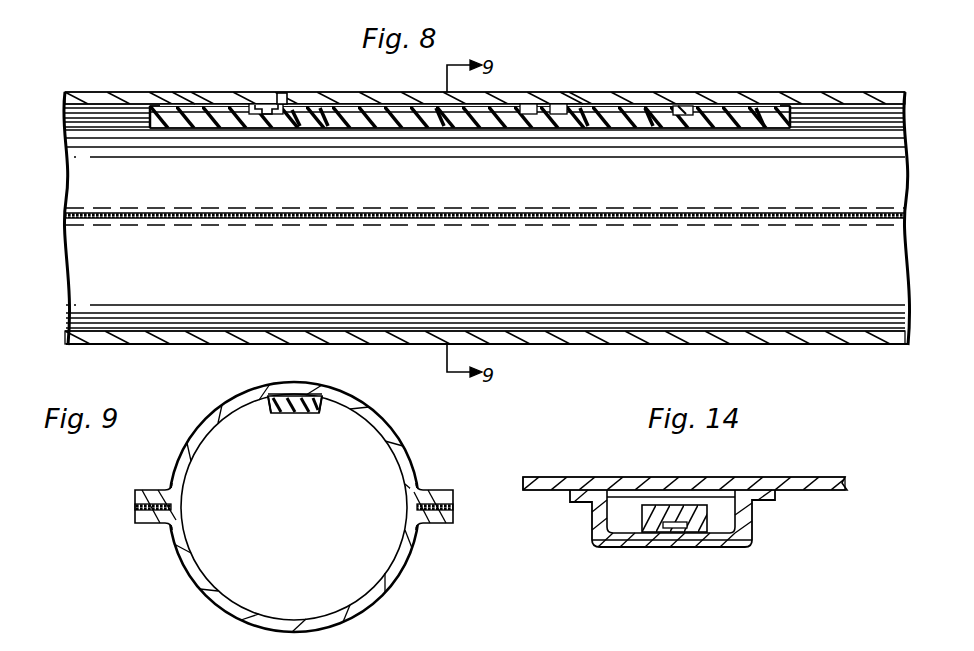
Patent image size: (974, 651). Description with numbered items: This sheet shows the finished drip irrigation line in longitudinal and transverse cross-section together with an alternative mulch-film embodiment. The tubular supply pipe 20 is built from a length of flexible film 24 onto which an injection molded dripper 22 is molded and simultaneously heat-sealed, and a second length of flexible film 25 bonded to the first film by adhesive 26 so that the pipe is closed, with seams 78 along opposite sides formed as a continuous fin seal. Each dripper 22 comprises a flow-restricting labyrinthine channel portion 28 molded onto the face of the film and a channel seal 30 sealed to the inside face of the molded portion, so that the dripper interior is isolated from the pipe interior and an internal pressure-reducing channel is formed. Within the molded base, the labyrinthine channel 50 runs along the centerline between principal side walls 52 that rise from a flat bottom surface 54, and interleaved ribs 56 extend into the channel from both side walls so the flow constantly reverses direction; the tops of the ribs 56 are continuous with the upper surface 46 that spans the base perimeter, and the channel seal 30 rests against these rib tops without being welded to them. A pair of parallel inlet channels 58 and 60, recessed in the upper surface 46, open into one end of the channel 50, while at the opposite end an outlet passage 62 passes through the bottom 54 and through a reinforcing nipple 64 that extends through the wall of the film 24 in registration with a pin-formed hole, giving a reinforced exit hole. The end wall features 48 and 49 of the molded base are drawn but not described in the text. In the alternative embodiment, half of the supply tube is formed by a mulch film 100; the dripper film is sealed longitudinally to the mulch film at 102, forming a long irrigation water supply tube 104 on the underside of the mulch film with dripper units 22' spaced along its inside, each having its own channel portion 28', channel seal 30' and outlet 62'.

In FIG. 8, the tubular supply pipe 20 is at (708, 350).
In FIG. 9, the tubular supply pipe 20 is at (428, 470).
In FIG. 8, the injection molded dripper 22 is at (470, 147).
In FIG. 9, the injection molded dripper 22 is at (309, 430).
In FIG. 8, the flexible film 24 is at (588, 101).
In FIG. 9, the flexible film 24 is at (396, 433).
In FIG. 14, the flexible film 24 is at (650, 548).
In FIG. 8, the second flexible film 25 is at (624, 340).
In FIG. 9, the second flexible film 25 is at (386, 592).
In FIG. 8, the adhesive 26 is at (494, 216).
In FIG. 9, the adhesive 26 is at (444, 496).
In FIG. 8, the labyrinthine channel portion 28 is at (470, 146).
In FIG. 8, the channel seal 30 is at (512, 147).
In FIG. 9, the channel seal 30 is at (295, 421).
In FIG. 8, the upper surface 46 is at (756, 128).
In FIG. 9, the upper surface 46 is at (270, 408).
In FIG. 8, the wall portion 48 is at (182, 102).
In FIG. 8, the end wall 49 is at (152, 122).
In FIG. 8, the labyrinthine channel 50 is at (438, 118).
In FIG. 8, the principal side walls 52 is at (322, 114).
In FIG. 8, the flat bottom surface 54 is at (647, 118).
In FIG. 8, the ribs 56 is at (293, 128).
In FIG. 9, the ribs 56 is at (306, 396).
In FIG. 8, the inlet channel 58 is at (688, 108).
In FIG. 8, the inlet channel 60 is at (680, 108).
In FIG. 8, the outlet passage 62 is at (259, 87).
In FIG. 8, the reinforcing nipple 64 is at (286, 98).
In FIG. 8, the seams 78 is at (598, 226).
In FIG. 9, the seams 78 is at (148, 525).
In FIG. 14, the mulch film 100 is at (812, 490).
In FIG. 14, the longitudinal seal 102 is at (584, 492).
In FIG. 14, the irrigation water supply tube 104 is at (668, 498).
In FIG. 14, the dripper unit 22' is at (617, 477).
In FIG. 14, the channel 28' is at (665, 536).
In FIG. 14, the insert body 30' is at (726, 524).
In FIG. 14, the slot 62' is at (702, 554).